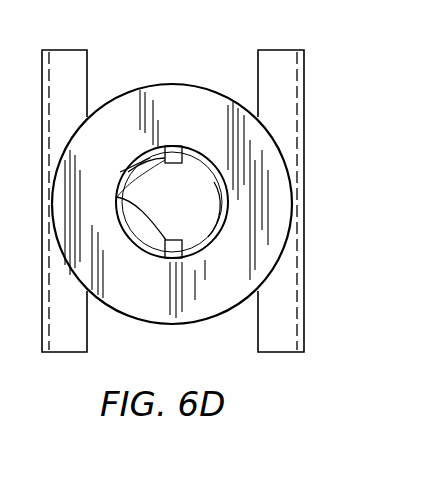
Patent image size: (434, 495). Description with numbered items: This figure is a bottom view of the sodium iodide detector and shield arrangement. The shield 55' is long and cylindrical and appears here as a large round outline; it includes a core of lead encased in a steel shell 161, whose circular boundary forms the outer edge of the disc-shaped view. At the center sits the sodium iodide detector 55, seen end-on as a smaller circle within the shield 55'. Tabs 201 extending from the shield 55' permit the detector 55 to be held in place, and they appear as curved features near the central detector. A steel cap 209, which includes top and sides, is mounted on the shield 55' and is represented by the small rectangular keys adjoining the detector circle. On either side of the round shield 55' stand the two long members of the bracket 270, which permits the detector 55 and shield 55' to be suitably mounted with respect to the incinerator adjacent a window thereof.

The bracket 270 is at (76, 50).
The steel shell 161 is at (172, 85).
The hub 55 is at (172, 202).
The steel cap 209 is at (183, 152).
The tabs 201 is at (116, 172).
The shield 55' is at (124, 352).